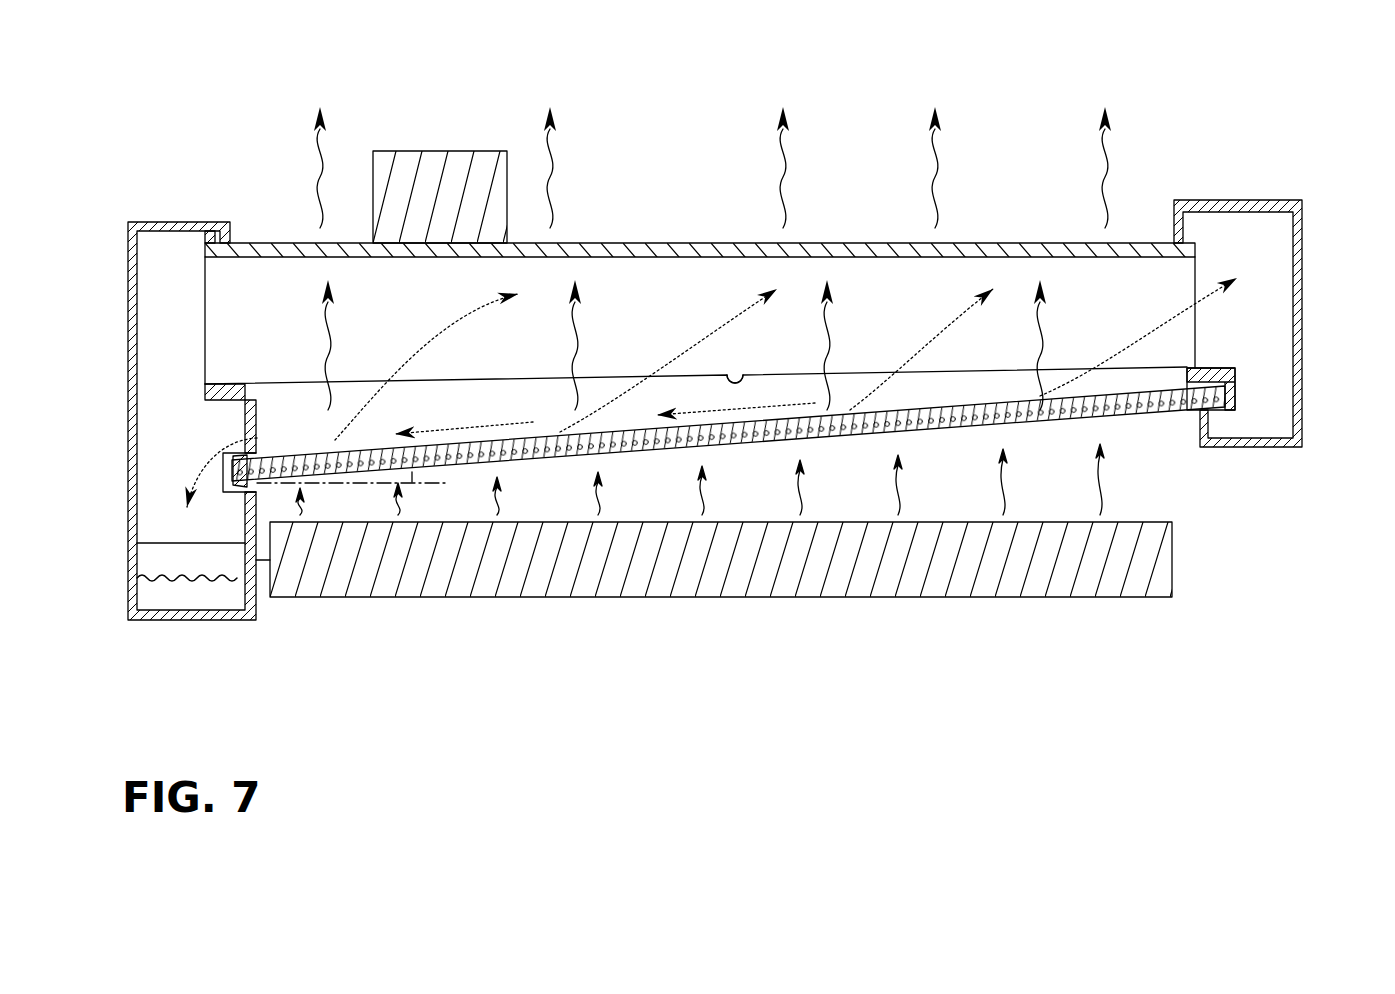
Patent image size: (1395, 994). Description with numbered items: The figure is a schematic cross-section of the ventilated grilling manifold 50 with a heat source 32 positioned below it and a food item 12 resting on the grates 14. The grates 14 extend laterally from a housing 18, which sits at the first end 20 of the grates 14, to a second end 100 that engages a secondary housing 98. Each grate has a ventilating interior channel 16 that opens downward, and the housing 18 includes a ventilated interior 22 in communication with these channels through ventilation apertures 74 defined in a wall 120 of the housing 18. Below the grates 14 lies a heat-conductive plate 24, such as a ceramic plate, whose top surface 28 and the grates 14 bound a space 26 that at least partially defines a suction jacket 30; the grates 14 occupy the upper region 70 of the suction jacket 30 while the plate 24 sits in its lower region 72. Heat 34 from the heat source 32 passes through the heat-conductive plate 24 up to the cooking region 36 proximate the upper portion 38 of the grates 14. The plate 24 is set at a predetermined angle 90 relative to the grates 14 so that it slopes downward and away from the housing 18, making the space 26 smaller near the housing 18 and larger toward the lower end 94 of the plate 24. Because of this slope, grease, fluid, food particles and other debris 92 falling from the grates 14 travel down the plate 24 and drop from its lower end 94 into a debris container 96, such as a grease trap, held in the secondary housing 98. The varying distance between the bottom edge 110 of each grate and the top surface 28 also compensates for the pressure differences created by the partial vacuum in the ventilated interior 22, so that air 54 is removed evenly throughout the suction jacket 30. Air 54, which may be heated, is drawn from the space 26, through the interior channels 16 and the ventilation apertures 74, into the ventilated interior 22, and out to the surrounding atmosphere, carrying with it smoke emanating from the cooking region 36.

The ventilated grilling manifold 50 is at (203, 125).
The second end 100 is at (233, 242).
The food items 12 is at (418, 150).
The cooking region 36 is at (666, 222).
The heat 34 is at (786, 158).
The upper region 70 is at (997, 274).
The upper portion 38 is at (1133, 242).
The wall 120 is at (1178, 222).
The housing 18 is at (1241, 197).
The first end 20 is at (1195, 250).
The ventilation apertures 74 is at (1195, 268).
The ventilated interior 22 is at (1260, 327).
The heat-conductive plate 24 is at (1160, 410).
The grates 14 is at (236, 275).
The secondary housing 98 is at (128, 254).
The interior channels 16 is at (248, 320).
The space 26 is at (286, 425).
The debris 92 is at (257, 438).
The debris container 96 is at (138, 585).
The lower end 94 is at (244, 490).
The top surface 28 is at (276, 476).
The predetermined angle 90 is at (413, 474).
The suction jacket 30 is at (578, 424).
The heat source 32 is at (1110, 598).
The lower region 72 is at (333, 446).
The air 54 is at (463, 322).
The bottom edge 110 is at (745, 374).